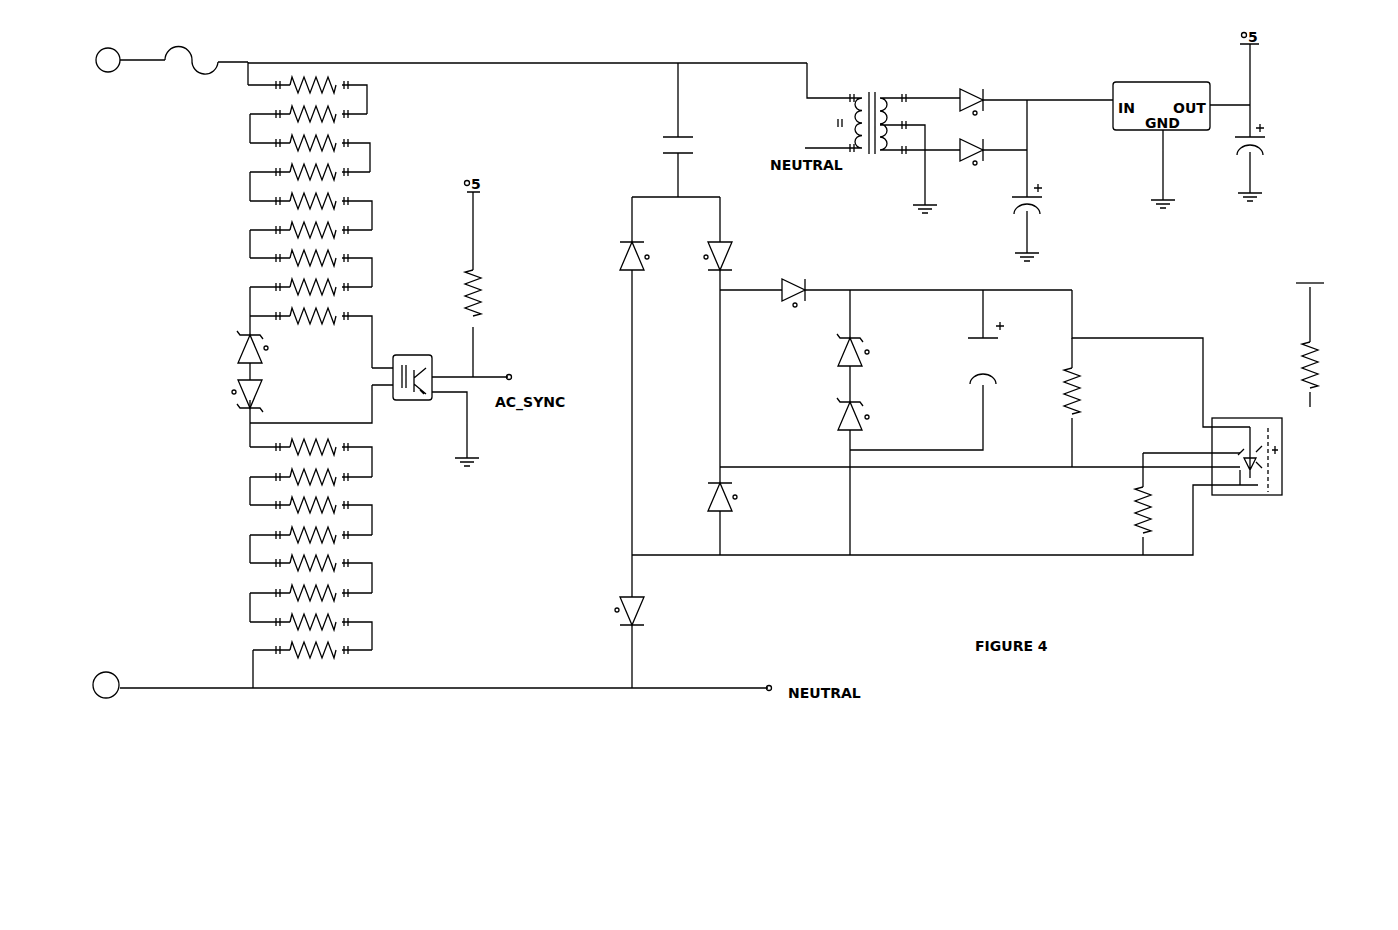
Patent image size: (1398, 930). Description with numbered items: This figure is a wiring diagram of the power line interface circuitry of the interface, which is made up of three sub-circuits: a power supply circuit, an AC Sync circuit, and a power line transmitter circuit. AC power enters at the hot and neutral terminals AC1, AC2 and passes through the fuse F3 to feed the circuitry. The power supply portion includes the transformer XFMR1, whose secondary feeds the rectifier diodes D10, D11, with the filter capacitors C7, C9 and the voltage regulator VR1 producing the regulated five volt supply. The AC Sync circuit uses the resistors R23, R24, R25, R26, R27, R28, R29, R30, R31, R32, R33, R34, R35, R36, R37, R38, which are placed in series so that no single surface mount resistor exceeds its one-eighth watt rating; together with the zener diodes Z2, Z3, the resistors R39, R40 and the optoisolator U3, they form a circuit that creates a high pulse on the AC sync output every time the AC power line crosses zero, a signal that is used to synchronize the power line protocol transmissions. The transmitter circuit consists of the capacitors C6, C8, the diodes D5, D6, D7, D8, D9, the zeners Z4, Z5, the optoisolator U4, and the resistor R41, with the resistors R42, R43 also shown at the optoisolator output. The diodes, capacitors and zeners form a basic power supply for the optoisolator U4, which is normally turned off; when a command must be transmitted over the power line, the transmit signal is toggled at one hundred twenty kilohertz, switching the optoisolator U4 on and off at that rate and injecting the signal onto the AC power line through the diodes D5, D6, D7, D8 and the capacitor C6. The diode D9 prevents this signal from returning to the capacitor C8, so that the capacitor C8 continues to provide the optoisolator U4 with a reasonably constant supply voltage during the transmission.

The AC hot input terminal AC1 is at (105, 84).
The AC neutral input terminal AC2 is at (111, 659).
The fuse 250 mA F3 is at (198, 73).
The resistor R23 is at (346, 94).
The resistor R24 is at (268, 124).
The resistor R25 is at (350, 153).
The resistor R26 is at (269, 184).
The resistor R27 is at (350, 212).
The resistor R28 is at (271, 241).
The resistor R29 is at (350, 268).
The resistor R30 is at (271, 299).
The resistor R31 is at (273, 454).
The resistor R32 is at (351, 482).
The resistor R33 is at (272, 516).
The resistor R34 is at (351, 543).
The resistor R35 is at (272, 574).
The resistor R36 is at (351, 603).
The resistor R37 is at (273, 636).
The resistor R38 is at (353, 665).
The resistor R39 is at (311, 338).
The resistor R40 is at (496, 293).
The resistor R41 is at (1113, 382).
The resistor 1K R42 is at (1119, 504).
The resistor 180 ohm R43 is at (1350, 347).
The zener diode Z2 is at (219, 351).
The zener diode Z3 is at (214, 395).
The zener Z4 is at (803, 346).
The zener Z5 is at (803, 417).
The diode D5 is at (595, 397).
The diode D6 is at (750, 340).
The diode D7 is at (692, 519).
The diode D8 is at (598, 642).
The diode D9 is at (820, 277).
The rectifier diode D10 is at (988, 86).
The rectifier diode D11 is at (984, 141).
The capacitor C6 is at (708, 130).
The filter capacitor C7 is at (995, 216).
The capacitor C8 is at (961, 337).
The filter capacitor C9 is at (1230, 162).
The transformer XFMR1 is at (879, 105).
The voltage regulator VR1 is at (1161, 86).
The optocoupler AC sync U3 is at (412, 377).
The optoisolator U4 is at (1247, 477).